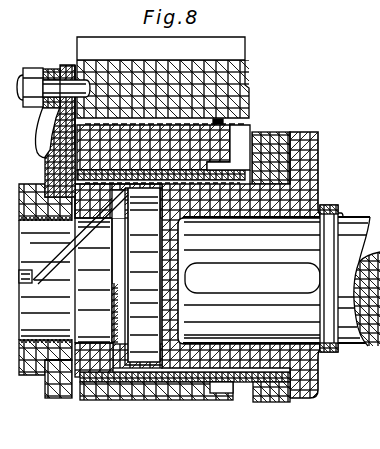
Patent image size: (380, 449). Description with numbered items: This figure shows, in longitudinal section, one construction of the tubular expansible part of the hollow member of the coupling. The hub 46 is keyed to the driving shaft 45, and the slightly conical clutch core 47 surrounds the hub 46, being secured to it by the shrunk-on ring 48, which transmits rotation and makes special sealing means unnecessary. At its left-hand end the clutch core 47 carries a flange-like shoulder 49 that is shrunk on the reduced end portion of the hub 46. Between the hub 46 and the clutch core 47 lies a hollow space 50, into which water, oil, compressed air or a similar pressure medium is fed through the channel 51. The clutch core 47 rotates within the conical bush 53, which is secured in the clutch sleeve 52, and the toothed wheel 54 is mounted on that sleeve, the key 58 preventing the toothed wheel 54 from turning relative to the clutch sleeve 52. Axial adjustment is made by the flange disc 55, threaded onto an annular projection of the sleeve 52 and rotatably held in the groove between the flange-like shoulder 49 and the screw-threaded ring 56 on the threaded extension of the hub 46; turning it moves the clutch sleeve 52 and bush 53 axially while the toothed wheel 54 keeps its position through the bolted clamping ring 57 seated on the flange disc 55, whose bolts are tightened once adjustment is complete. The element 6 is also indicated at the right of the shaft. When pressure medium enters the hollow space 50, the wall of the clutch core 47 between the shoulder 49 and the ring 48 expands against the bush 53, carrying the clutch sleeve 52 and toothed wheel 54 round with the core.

The cam lobe 6 is at (367, 281).
The driving shaft 45 is at (352, 336).
The hub 46 is at (318, 153).
The clutch core 47 is at (238, 181).
The shrunk-on ring 48 is at (286, 133).
The flange-like shoulder 49 is at (95, 378).
The hollow space 50 is at (222, 373).
The channel 51 is at (35, 280).
The clutch sleeve 52 is at (153, 147).
The bush 53 is at (100, 172).
The toothed wheel 54 is at (237, 73).
The flange disc 55 is at (45, 131).
The screw-threaded ring 56 is at (57, 398).
The clamping ring 57 is at (52, 68).
The key 58 is at (217, 122).